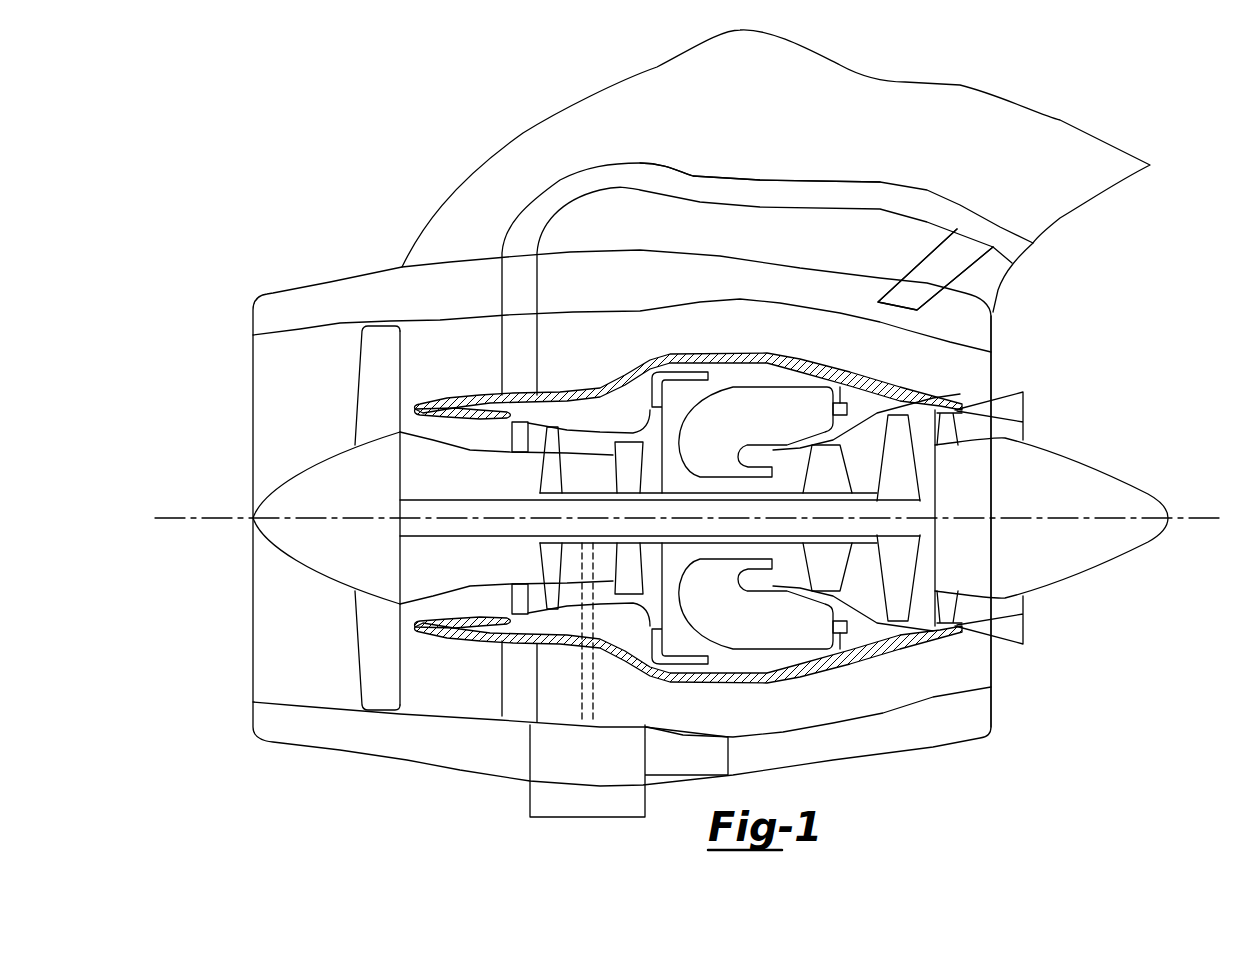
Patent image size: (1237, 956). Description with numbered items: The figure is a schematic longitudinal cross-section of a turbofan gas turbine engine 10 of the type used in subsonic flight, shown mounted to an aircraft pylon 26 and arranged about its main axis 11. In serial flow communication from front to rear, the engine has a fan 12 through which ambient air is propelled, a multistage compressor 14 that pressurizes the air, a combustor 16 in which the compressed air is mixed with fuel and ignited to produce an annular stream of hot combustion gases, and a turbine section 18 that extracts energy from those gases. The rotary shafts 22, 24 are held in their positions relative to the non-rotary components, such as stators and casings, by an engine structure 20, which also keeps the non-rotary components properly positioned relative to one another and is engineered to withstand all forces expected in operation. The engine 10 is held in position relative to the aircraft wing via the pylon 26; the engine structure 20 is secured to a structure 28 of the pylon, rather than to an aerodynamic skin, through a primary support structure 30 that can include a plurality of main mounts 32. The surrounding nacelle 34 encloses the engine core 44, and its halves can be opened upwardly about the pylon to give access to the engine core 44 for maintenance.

The turbofan gas turbine engine 10 is at (880, 260).
The main axis 11 is at (1195, 517).
The fan 12 is at (373, 642).
The multistage compressor 14 is at (583, 443).
The combustor 16 is at (780, 403).
The turbine section 18 is at (877, 573).
The engine structure 20 is at (500, 436).
The rotary shaft 22 is at (483, 532).
The rotary shaft 24 is at (680, 493).
The pylon 26 is at (697, 97).
The structure of the pylon 28 is at (664, 178).
The primary support structure 30 is at (507, 228).
The main mounts 32 is at (547, 213).
The nacelle 34 is at (347, 303).
The engine core 44 is at (942, 390).